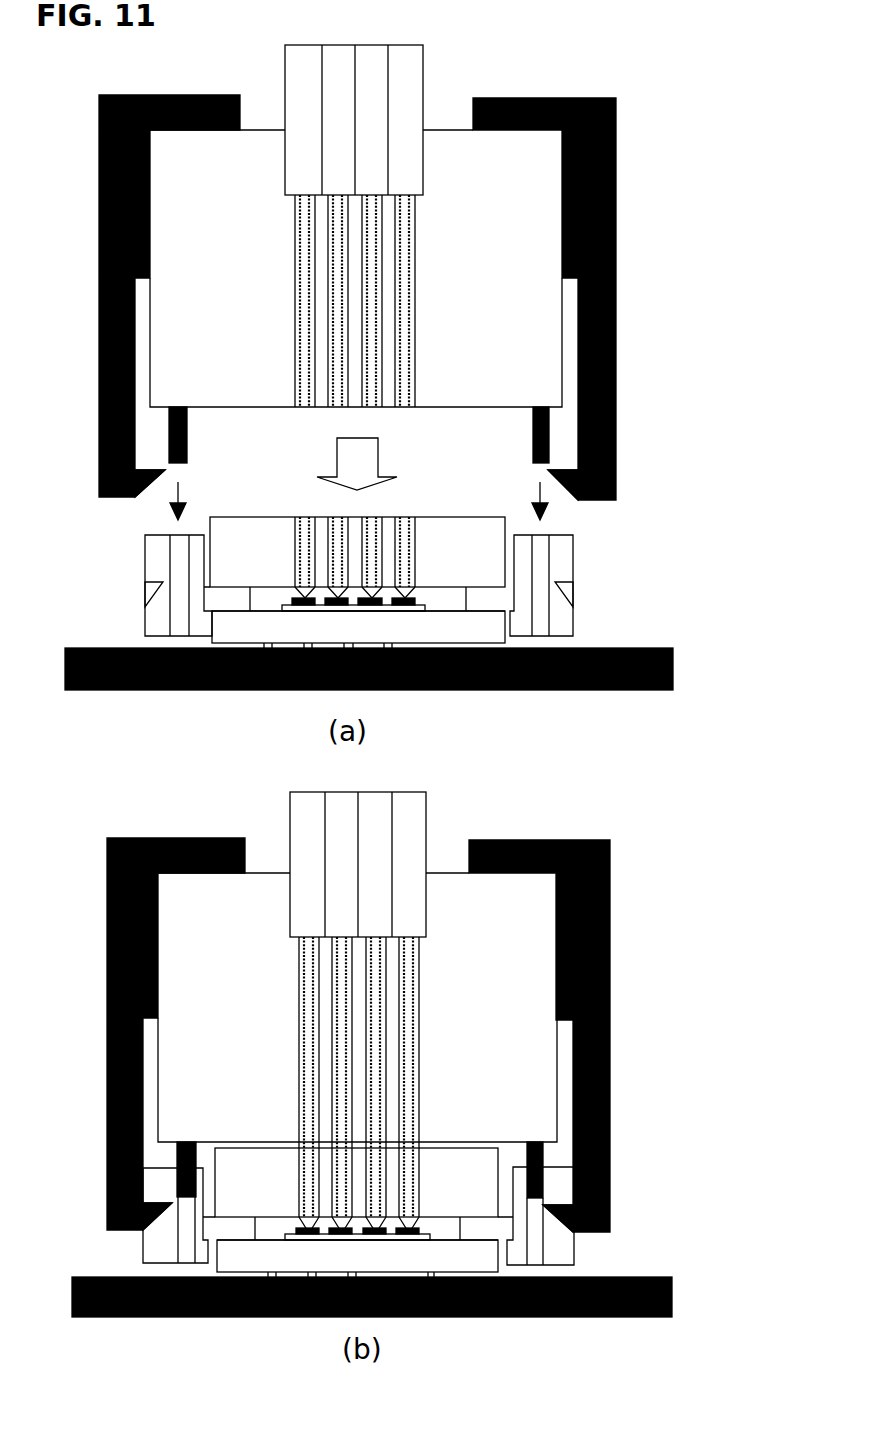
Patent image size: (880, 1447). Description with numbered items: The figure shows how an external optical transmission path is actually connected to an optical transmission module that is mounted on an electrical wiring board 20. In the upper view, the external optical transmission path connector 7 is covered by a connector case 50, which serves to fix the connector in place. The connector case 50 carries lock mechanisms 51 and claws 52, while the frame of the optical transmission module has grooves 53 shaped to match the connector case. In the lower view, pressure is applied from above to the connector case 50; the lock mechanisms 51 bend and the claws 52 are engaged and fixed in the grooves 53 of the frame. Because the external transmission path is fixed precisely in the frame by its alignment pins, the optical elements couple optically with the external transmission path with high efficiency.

The external optical transmission path connector 7 is at (522, 189).
The connector case 50 is at (616, 202).
The lock mechanism 51 is at (617, 470).
The claw 52 is at (603, 493).
The groove 53 is at (567, 590).
The electrical wiring board 20 is at (675, 660).